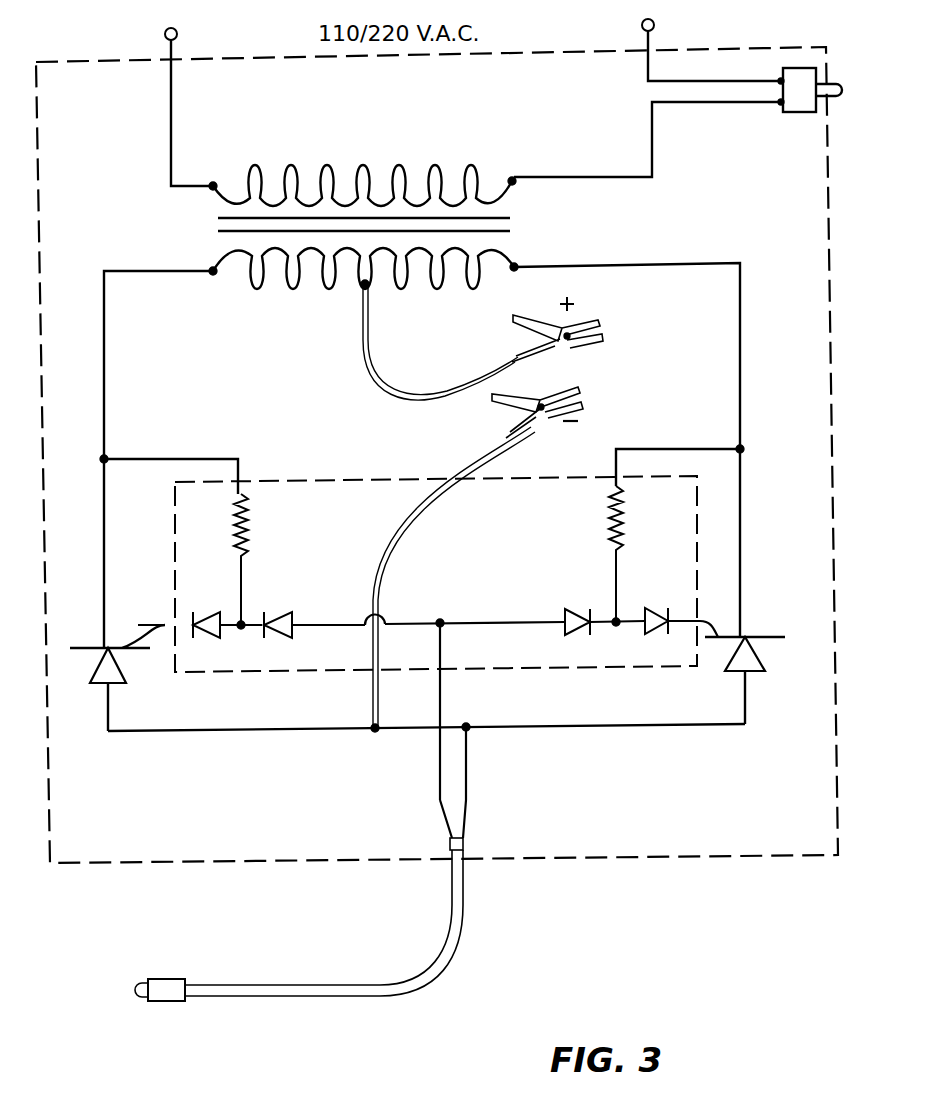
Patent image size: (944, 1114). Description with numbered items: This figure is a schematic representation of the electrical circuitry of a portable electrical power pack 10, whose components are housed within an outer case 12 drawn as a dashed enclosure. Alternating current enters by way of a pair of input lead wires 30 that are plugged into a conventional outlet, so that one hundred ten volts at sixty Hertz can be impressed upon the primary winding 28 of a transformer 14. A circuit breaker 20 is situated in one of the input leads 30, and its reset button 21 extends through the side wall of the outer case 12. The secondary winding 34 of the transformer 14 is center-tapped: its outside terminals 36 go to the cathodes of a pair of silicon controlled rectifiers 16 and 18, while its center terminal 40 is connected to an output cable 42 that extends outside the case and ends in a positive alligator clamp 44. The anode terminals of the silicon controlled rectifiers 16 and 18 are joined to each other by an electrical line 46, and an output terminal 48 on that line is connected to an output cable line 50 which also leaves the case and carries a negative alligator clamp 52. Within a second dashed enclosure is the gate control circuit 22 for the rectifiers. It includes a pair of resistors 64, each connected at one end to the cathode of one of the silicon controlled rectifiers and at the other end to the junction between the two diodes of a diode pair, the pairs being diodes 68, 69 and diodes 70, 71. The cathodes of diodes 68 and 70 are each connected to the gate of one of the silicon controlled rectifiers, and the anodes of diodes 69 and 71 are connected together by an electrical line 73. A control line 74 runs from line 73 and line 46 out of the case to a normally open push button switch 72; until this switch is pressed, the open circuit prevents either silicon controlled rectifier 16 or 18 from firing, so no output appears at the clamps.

The portable electrical power pack 10 is at (813, 853).
The outer case 12 is at (203, 865).
The transformer 14 is at (319, 227).
The silicon controlled rectifier 16 is at (102, 686).
The silicon controlled rectifier 18 is at (756, 676).
The circuit breaker 20 is at (803, 112).
The reset button 21 is at (826, 86).
The gate control circuit 22 is at (328, 478).
The primary winding 28 is at (372, 160).
The input lead wires 30 is at (176, 96).
The secondary winding 34 is at (332, 288).
The outside terminals 36 is at (212, 278).
The center terminal 40 is at (368, 288).
The output cable 42 is at (373, 378).
The positive alligator clamp 44 is at (590, 324).
The electrical line 46 is at (265, 733).
The output terminal 48 is at (388, 736).
The output cable line 50 is at (393, 518).
The negative alligator clamp 52 is at (570, 393).
The resistors 64 is at (250, 514).
The diode 68 is at (208, 612).
The diode 69 is at (290, 608).
The diode 70 is at (660, 600).
The diode 71 is at (580, 606).
The electrical line 73 is at (462, 620).
The control line 74 is at (470, 780).
The push button switch 72 is at (168, 1002).